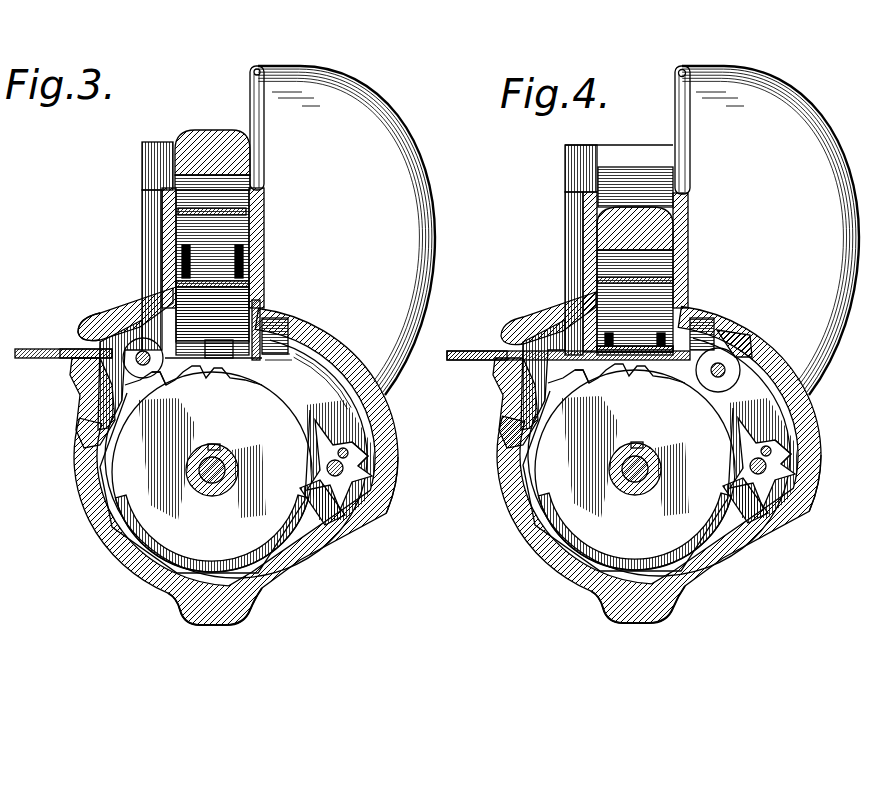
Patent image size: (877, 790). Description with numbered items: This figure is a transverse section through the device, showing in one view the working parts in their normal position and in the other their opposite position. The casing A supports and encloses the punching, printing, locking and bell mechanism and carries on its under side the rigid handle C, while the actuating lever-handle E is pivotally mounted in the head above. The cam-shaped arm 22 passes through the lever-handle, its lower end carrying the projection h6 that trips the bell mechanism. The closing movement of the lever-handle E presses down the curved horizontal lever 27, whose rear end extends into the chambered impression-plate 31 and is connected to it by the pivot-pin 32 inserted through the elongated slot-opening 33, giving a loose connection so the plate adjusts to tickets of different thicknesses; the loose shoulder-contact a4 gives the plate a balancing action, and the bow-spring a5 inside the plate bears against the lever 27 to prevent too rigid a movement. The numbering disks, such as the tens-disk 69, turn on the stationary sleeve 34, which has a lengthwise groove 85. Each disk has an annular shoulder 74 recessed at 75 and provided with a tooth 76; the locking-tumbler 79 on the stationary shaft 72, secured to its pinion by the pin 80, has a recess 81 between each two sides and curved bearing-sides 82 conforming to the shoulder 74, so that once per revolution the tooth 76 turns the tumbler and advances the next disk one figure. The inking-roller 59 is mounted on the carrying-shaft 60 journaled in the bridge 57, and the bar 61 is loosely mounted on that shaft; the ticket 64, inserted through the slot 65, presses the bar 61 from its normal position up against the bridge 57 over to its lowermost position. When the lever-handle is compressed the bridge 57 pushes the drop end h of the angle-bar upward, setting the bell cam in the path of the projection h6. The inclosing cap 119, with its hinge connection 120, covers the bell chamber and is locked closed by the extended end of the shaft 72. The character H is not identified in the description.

In FIG. 3, the inclosing cap 119 is at (398, 240).
In FIG. 4, the inclosing cap 119 is at (775, 118).
In FIG. 3, the hinge connection 120 is at (254, 70).
In FIG. 4, the hinge connection 120 is at (687, 66).
In FIG. 3, the actuating lever-handle E is at (250, 162).
In FIG. 4, the actuating lever-handle E is at (690, 240).
In FIG. 3, the shoulder-contact a4 is at (172, 186).
In FIG. 3, the bow-spring a5 is at (252, 283).
In FIG. 4, the bow-spring a5 is at (654, 368).
In FIG. 3, the chambered impression-plate 31 is at (264, 212).
In FIG. 4, the chambered impression-plate 31 is at (690, 283).
In FIG. 3, the pivot-pin 32 is at (165, 235).
In FIG. 4, the pivot-pin 32 is at (597, 312).
In FIG. 3, the elongated slot-opening 33 is at (182, 250).
In FIG. 4, the elongated slot-opening 33 is at (597, 318).
In FIG. 3, the curved horizontal lever 27 is at (183, 292).
In FIG. 3, the cam-shaped arm 22 is at (296, 322).
In FIG. 3, the projection h6 is at (290, 332).
In FIG. 3, the vertical end part h is at (304, 374).
In FIG. 3, the lever H is at (140, 292).
In FIG. 3, the bridge 57 is at (128, 320).
In FIG. 4, the bridge 57 is at (765, 342).
In FIG. 3, the bar 61 is at (96, 338).
In FIG. 4, the bar 61 is at (730, 342).
In FIG. 3, the ticket 64 is at (48, 359).
In FIG. 4, the ticket 64 is at (458, 362).
In FIG. 3, the slot 65 is at (98, 350).
In FIG. 4, the slot 65 is at (503, 348).
In FIG. 3, the inking-roller 59 is at (108, 388).
In FIG. 4, the inking-roller 59 is at (795, 388).
In FIG. 3, the carrying-shaft 60 is at (147, 370).
In FIG. 4, the carrying-shaft 60 is at (727, 375).
In FIG. 3, the tens-disk 69 is at (112, 540).
In FIG. 4, the tens-disk 69 is at (530, 558).
In FIG. 3, the casing A is at (145, 586).
In FIG. 4, the casing A is at (654, 489).
In FIG. 3, the rigid handle C is at (212, 620).
In FIG. 4, the rigid handle C is at (676, 618).
In FIG. 3, the annular shoulder 74 is at (282, 405).
In FIG. 4, the annular shoulder 74 is at (722, 410).
In FIG. 3, the recess 75 is at (222, 387).
In FIG. 4, the recess 75 is at (652, 385).
In FIG. 3, the tooth 76 is at (182, 407).
In FIG. 4, the tooth 76 is at (595, 403).
In FIG. 3, the groove 85 is at (208, 446).
In FIG. 4, the groove 85 is at (627, 444).
In FIG. 3, the stationary sleeve 34 is at (236, 476).
In FIG. 4, the stationary sleeve 34 is at (612, 478).
In FIG. 3, the stationary shaft 72 is at (348, 477).
In FIG. 4, the stationary shaft 72 is at (762, 481).
In FIG. 3, the pin 80 is at (370, 452).
In FIG. 4, the pin 80 is at (772, 454).
In FIG. 3, the locking-tumbler 79 is at (362, 463).
In FIG. 4, the locking-tumbler 79 is at (742, 473).
In FIG. 3, the recess 81 is at (375, 480).
In FIG. 4, the recess 81 is at (790, 474).
In FIG. 3, the curved bearing-side 82 is at (340, 512).
In FIG. 4, the curved bearing-side 82 is at (802, 512).